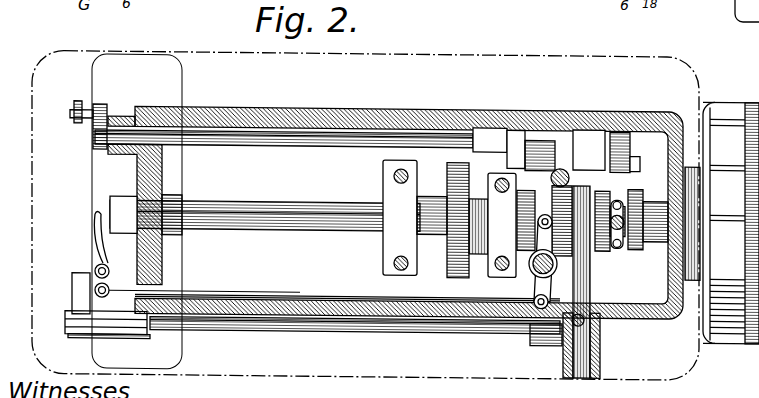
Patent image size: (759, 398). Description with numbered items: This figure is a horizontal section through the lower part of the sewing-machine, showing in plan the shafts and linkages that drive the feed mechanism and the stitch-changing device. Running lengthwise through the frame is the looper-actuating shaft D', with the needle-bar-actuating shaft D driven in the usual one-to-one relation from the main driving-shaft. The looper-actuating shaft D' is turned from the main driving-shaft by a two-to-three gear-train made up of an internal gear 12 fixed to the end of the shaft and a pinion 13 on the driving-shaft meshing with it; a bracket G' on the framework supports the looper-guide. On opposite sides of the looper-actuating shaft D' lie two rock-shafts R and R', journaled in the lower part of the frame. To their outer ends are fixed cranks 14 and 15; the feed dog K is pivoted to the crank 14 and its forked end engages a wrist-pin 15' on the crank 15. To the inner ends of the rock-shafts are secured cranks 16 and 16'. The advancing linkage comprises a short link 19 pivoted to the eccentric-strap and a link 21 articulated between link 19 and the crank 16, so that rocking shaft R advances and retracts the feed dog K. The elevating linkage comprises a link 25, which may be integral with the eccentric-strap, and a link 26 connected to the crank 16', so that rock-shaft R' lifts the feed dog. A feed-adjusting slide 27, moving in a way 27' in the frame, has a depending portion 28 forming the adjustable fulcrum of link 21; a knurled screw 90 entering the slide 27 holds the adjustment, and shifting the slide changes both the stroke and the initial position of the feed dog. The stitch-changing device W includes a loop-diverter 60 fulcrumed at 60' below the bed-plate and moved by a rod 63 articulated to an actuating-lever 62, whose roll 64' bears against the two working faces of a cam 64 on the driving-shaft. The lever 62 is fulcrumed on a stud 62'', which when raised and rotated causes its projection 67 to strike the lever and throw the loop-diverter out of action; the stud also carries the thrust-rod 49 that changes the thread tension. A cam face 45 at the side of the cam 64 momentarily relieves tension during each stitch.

The rock-shaft R' is at (389, 198).
The rock-shaft R is at (347, 327).
The rod 63 is at (296, 301).
The bracket G' is at (150, 214).
The crank 15 is at (77, 137).
The wrist-pin 15' is at (76, 103).
The looper-actuating shaft D' is at (265, 209).
The internal gear 12 is at (458, 175).
The pinion 13 is at (455, 238).
The roll 64' is at (500, 225).
The stud 62'' is at (481, 295).
The crank 16' is at (504, 129).
The link 26 is at (530, 155).
The cam 64 is at (541, 181).
The thrust-rod 49 is at (566, 178).
The link 19 is at (589, 150).
The link 25 is at (632, 160).
The needle-bar-actuating shaft D is at (526, 220).
The stitch-changing device W is at (534, 261).
The slide 27 is at (592, 335).
The way 27' is at (603, 282).
The screw 90 is at (596, 327).
The depending portion 28 is at (619, 287).
The cam face 45 is at (656, 297).
The link 21 is at (608, 205).
The projection 67 is at (548, 328).
The lever 62 is at (514, 333).
The crank 16 is at (552, 366).
The loop-diverter 60 is at (184, 255).
The fulcrum 60' is at (64, 293).
The feed dog K is at (78, 297).
The crank 14 is at (76, 336).